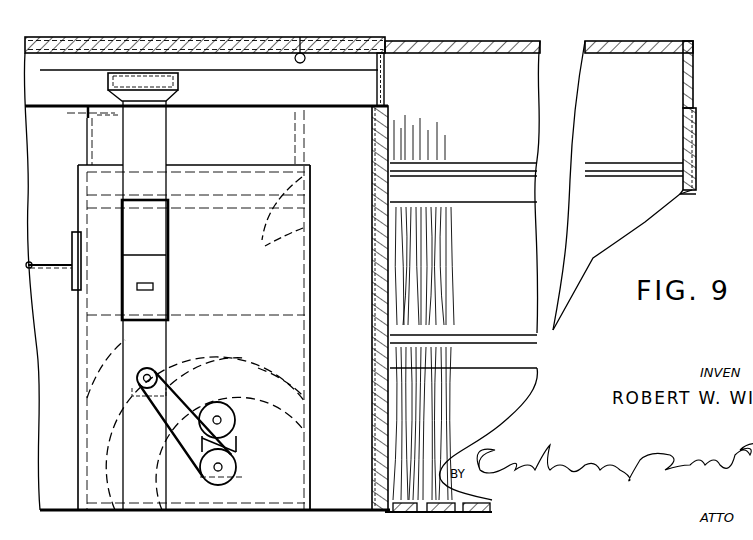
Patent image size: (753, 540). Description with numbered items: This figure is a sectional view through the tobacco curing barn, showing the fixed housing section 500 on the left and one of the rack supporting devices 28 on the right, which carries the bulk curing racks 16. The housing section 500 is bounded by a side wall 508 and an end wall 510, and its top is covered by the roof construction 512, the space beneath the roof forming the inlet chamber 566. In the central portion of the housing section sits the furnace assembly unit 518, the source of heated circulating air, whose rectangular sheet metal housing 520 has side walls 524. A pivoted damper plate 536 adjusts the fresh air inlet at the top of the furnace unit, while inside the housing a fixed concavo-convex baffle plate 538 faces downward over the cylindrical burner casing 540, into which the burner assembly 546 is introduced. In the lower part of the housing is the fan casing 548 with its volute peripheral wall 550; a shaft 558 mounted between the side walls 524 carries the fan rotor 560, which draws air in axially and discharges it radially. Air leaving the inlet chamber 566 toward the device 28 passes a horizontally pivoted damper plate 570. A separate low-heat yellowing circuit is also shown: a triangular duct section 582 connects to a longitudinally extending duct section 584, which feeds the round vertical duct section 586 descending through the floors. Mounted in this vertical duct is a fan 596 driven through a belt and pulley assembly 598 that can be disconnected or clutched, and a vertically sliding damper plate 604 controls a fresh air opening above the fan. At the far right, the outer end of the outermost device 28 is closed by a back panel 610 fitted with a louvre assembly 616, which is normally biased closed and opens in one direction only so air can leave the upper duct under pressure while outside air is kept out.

The roof construction 512 is at (148, 39).
The fixed curing barn housing section 500 is at (260, 37).
The inlet chamber 566 is at (303, 58).
The rack supporting device 28 is at (590, 40).
The louvre assembly 616 is at (693, 69).
The back panel 610 is at (696, 142).
The damper plate 570 is at (384, 81).
The longitudinally extending duct section 584 is at (108, 80).
The triangular duct section 582 is at (277, 77).
The furnace assembly unit 518 is at (78, 164).
The damper plate 536 is at (181, 138).
The housing 520 is at (306, 160).
The baffle plate 538 is at (310, 178).
The burner assembly 546 is at (49, 264).
The burner casing 540 is at (308, 233).
The round vertical duct section 586 is at (148, 229).
The side wall 508 is at (378, 237).
The vertically sliding damper plate 604 is at (150, 279).
The end wall 510 is at (340, 286).
The volute peripheral wall 550 is at (88, 358).
The side wall 524 is at (307, 352).
The belt and pulley assembly 598 is at (188, 362).
The shaft 558 is at (217, 418).
The fan casing 548 is at (282, 384).
The fan rotor 560 is at (308, 414).
The fan 596 is at (164, 426).
The bulk curing rack 16 is at (506, 162).